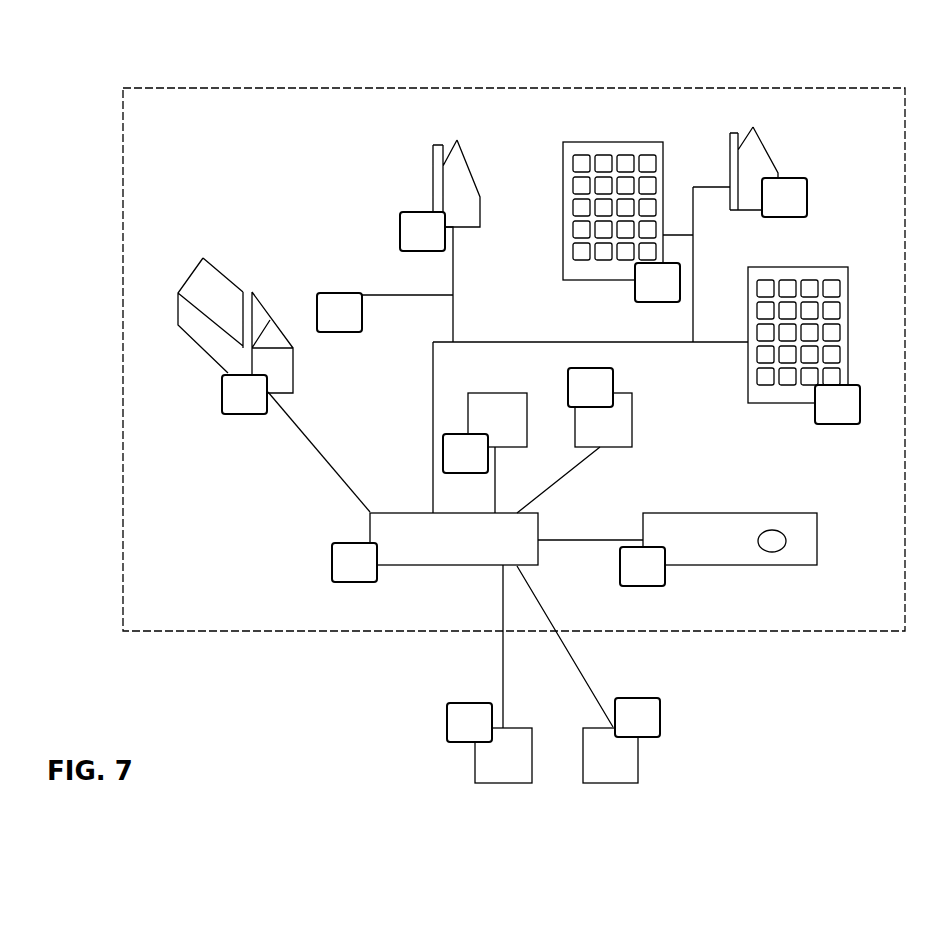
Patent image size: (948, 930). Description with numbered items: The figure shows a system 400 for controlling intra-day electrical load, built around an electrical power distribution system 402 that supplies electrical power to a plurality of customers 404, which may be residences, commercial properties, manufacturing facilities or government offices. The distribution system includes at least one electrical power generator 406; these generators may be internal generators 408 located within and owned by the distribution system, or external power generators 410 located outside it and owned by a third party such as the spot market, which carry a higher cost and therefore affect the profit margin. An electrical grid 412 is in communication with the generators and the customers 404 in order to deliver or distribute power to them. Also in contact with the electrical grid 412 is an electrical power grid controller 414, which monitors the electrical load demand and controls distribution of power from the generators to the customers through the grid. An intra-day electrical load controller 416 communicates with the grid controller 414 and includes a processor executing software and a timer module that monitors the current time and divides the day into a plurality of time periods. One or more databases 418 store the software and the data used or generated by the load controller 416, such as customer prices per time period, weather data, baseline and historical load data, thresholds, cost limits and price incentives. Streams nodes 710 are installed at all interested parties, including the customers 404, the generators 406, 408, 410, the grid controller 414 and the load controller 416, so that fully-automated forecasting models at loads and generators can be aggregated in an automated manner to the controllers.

The system for controlling intra-day electrical load 400 is at (176, 37).
The electrical power distribution system 402 is at (256, 633).
The customers 404 is at (228, 372).
The electrical power generator 406 is at (575, 442).
The internal generators 408 is at (468, 395).
The external power generators 410 is at (613, 785).
The electrical grid 412 is at (433, 387).
The electrical power grid controller 414 is at (405, 566).
The intra-day electrical load controller 416 is at (687, 513).
The databases 418 is at (770, 530).
The streams nodes 710 is at (530, 435).